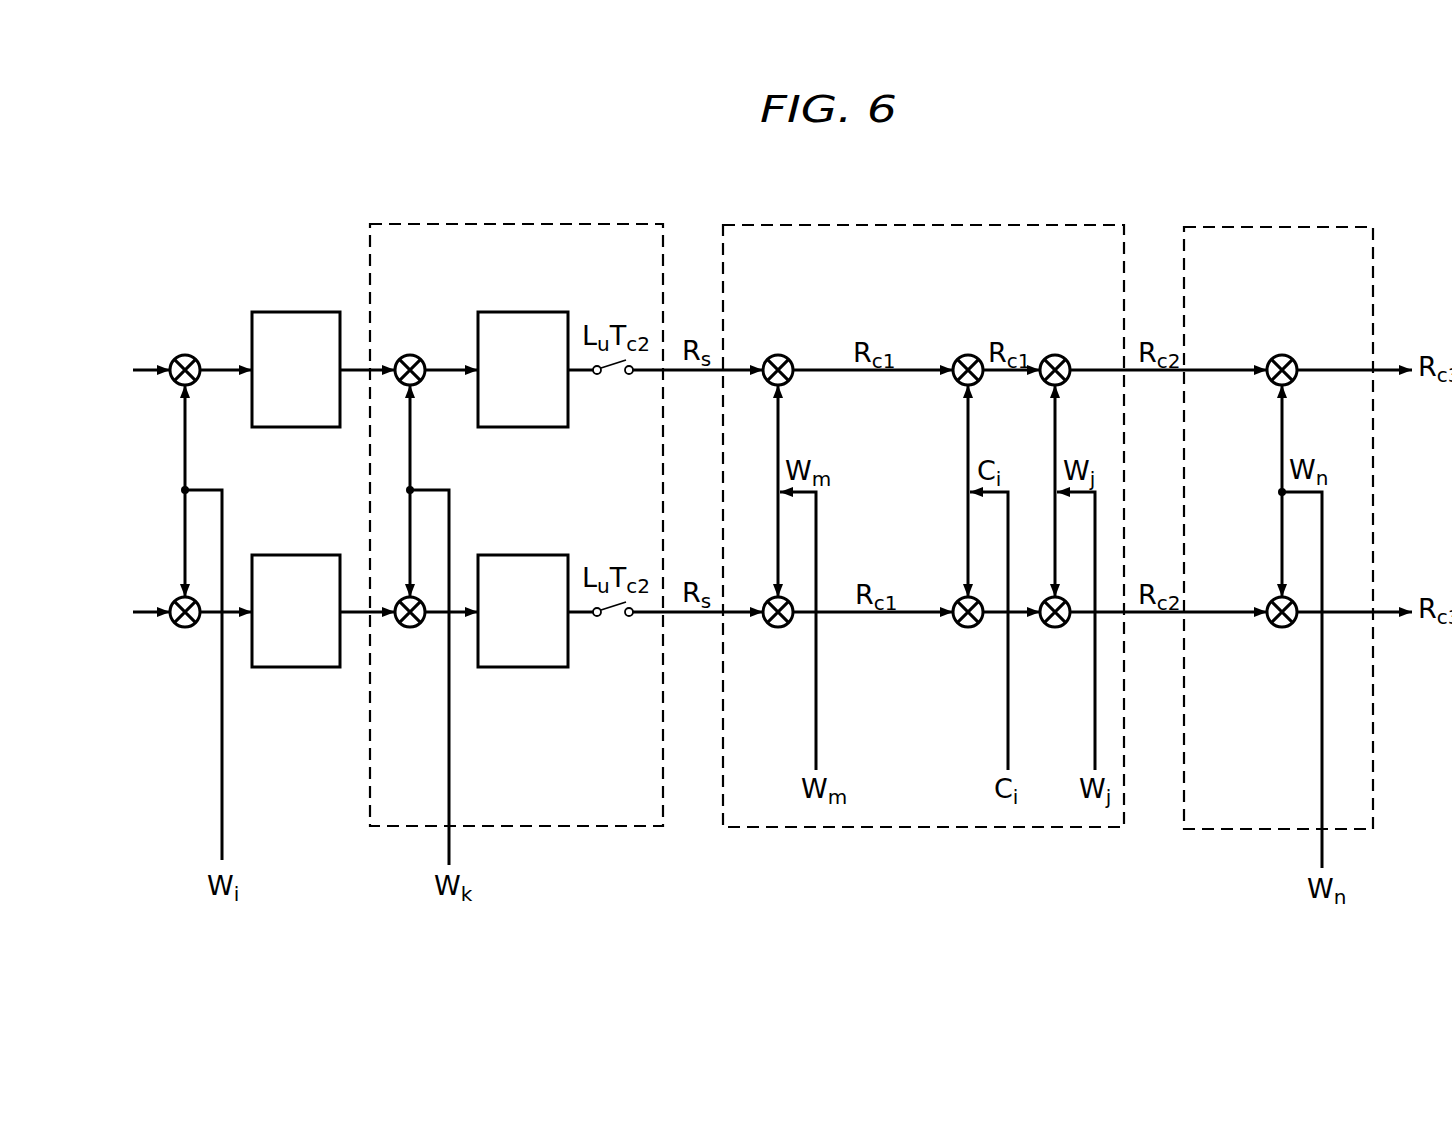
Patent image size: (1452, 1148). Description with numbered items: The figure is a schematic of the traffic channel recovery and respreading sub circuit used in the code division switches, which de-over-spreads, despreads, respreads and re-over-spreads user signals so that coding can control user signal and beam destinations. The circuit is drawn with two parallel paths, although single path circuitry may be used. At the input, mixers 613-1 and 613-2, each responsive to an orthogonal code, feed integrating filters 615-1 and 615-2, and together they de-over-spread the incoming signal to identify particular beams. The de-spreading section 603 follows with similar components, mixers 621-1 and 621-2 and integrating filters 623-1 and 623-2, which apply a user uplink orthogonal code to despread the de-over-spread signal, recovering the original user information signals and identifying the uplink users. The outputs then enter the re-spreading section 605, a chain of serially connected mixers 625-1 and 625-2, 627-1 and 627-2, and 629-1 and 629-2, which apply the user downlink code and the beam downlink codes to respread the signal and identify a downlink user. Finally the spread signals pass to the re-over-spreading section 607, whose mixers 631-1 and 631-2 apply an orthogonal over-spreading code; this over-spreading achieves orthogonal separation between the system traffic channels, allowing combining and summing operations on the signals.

The de-spreading section 603 is at (433, 224).
The re-spreading section 605 is at (795, 225).
The re-over-spreading section 607 is at (1277, 227).
The mixer 613-1 is at (185, 355).
The mixer 613-2 is at (185, 627).
The integrating filter 615-1 is at (298, 312).
The integrating filter 615-2 is at (297, 667).
The mixer 621-1 is at (410, 355).
The mixer 621-2 is at (410, 627).
The integrating filter 623-1 is at (524, 312).
The integrating filter 623-2 is at (523, 667).
The mixer 625-1 is at (778, 355).
The mixer 625-2 is at (778, 627).
The mixer 627-1 is at (968, 355).
The mixer 627-2 is at (968, 627).
The mixer 629-1 is at (1055, 355).
The mixer 629-2 is at (1055, 627).
The mixer 631-1 is at (1282, 355).
The mixer 631-2 is at (1282, 627).